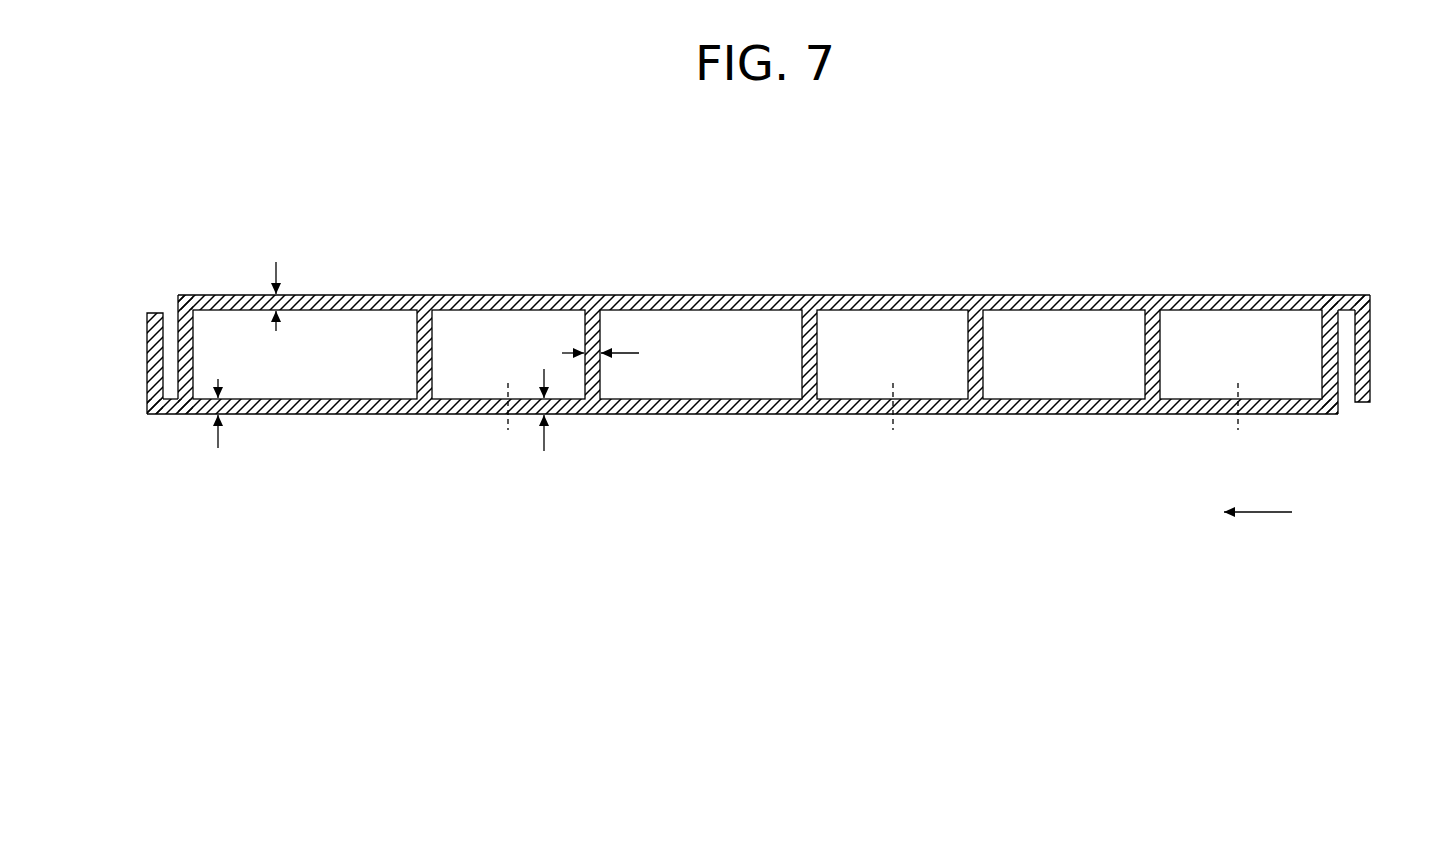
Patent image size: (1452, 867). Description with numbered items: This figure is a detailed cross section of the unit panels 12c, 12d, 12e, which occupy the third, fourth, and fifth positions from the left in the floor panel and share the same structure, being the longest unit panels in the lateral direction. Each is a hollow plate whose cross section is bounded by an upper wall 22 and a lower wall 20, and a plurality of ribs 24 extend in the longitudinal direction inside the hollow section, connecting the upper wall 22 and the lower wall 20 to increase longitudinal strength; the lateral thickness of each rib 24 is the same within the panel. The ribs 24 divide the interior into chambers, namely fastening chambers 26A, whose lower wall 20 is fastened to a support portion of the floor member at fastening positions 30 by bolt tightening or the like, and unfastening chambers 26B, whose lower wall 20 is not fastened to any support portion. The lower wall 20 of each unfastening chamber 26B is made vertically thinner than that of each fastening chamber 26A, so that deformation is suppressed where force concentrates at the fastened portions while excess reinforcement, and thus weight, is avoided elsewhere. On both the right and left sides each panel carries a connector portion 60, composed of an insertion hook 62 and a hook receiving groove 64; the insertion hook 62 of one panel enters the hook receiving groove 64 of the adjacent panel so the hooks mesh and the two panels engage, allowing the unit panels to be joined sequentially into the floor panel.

The unit panel 12c is at (759, 360).
The unit panel 12d is at (759, 360).
The unit panel 12e is at (337, 241).
The lower wall 20 is at (713, 419).
The upper wall 22 is at (641, 291).
The rib 24 is at (416, 340).
The fastening chamber 26A is at (478, 362).
The unfastening chamber 26B is at (358, 363).
The fastening position 30 is at (874, 427).
The connector portion 60 is at (170, 290).
The insertion hook 62 is at (147, 350).
The hook receiving groove 64 is at (172, 331).